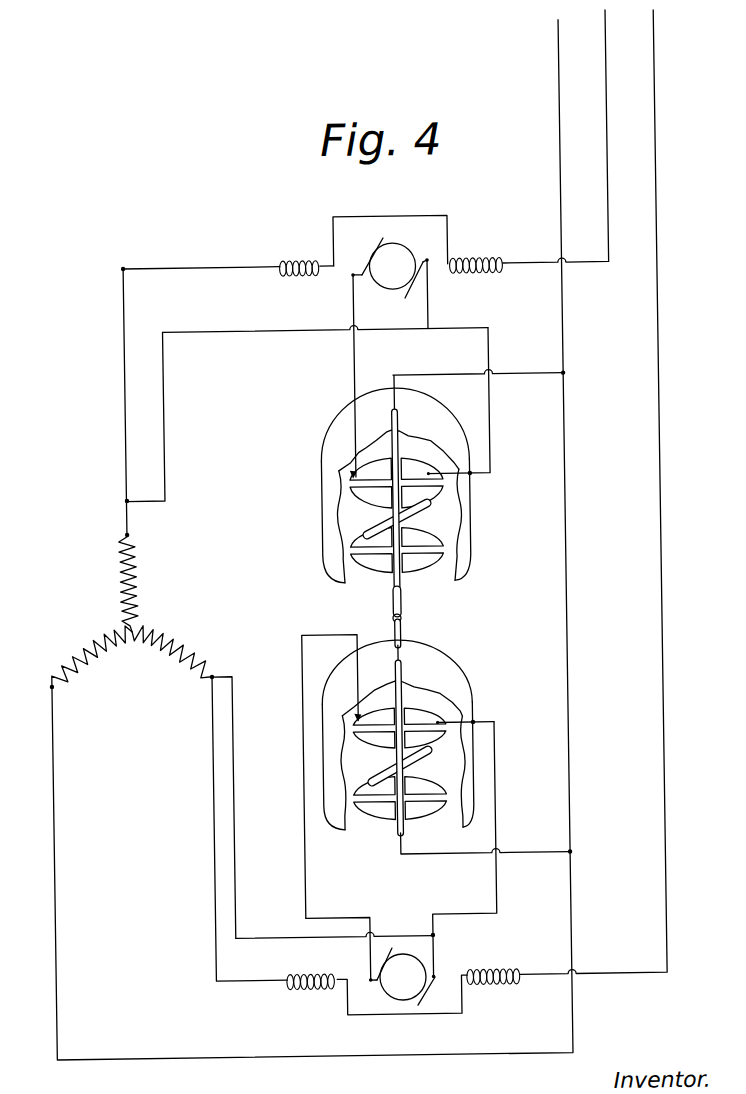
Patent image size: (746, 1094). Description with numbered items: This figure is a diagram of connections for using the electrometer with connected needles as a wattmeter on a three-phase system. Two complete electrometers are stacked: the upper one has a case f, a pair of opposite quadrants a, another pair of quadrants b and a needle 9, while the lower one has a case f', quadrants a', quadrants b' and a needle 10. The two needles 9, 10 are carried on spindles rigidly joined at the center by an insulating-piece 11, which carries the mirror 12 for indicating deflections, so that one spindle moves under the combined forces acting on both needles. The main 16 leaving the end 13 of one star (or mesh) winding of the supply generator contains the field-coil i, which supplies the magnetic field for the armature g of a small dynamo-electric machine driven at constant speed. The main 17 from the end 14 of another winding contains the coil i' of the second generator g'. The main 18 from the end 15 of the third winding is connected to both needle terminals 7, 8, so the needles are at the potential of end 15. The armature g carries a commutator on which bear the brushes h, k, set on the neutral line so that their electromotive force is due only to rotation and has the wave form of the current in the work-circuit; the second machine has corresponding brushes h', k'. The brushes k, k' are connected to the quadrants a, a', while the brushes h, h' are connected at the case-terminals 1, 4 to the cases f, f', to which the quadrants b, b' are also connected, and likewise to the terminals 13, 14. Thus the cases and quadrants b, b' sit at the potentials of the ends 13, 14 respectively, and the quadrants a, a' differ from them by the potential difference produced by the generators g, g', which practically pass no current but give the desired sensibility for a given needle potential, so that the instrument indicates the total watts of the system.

The case-terminal 1 is at (478, 478).
The case-terminal 4 is at (494, 726).
The needle terminal 7 is at (398, 376).
The needle terminal 8 is at (404, 862).
The needle 9 is at (431, 503).
The needle 10 is at (427, 752).
The insulating-piece 11 is at (401, 597).
The mirror 12 is at (400, 617).
The end of star winding 13 is at (130, 533).
The end of star winding 14 is at (215, 672).
The end of star winding 15 is at (56, 688).
The main 16 is at (174, 264).
The main 17 is at (208, 794).
The main 18 is at (563, 180).
The quadrants a is at (371, 507).
The quadrants b is at (422, 506).
The quadrants a' is at (374, 753).
The quadrants b' is at (458, 754).
The case f is at (379, 485).
The case f' is at (380, 776).
The generator armature g is at (392, 266).
The second generator g' is at (403, 977).
The brush h is at (416, 293).
The brush h' is at (431, 993).
The field-coil i is at (390, 229).
The field-coil i' is at (402, 1027).
The brush k is at (364, 358).
The brush k' is at (340, 844).